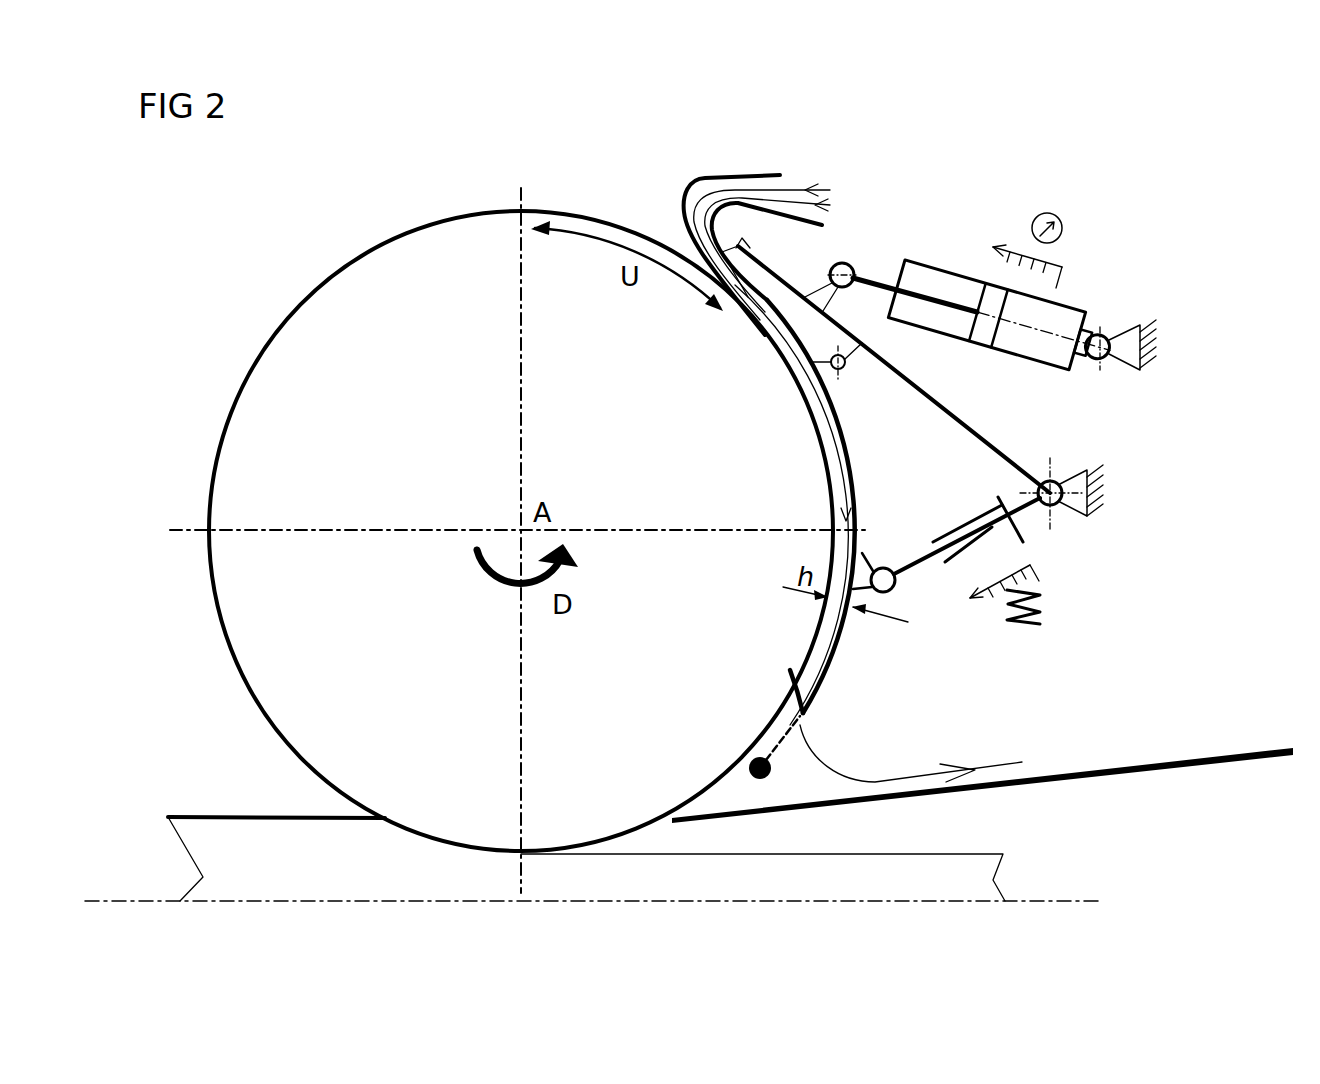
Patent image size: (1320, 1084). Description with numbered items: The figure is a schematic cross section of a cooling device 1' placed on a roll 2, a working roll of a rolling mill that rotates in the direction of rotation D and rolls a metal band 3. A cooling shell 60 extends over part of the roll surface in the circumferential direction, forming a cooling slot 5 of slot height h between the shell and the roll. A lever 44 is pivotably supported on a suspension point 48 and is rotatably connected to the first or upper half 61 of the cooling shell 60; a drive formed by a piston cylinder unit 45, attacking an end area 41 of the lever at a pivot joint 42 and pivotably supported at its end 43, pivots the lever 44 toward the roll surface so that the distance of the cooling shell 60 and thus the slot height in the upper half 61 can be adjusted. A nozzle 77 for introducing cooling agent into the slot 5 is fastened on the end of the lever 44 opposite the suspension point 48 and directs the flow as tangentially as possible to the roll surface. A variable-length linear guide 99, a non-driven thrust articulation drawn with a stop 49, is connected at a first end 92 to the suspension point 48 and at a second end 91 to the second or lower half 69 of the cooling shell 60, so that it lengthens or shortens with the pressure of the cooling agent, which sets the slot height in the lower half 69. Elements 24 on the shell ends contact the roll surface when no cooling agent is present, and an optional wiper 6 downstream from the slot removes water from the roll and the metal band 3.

The cooling device 1' is at (997, 161).
The roll 2 is at (350, 262).
The metal band 3 is at (280, 850).
The cooling slot 5 is at (838, 433).
The wiper 6 is at (1122, 770).
The element for contacting the roll surface 24 is at (753, 760).
The end area of the lever 41 is at (768, 280).
The pivot joint 42 is at (853, 271).
The end of the piston cylinder unit 43 is at (1060, 300).
The lever 44 is at (1010, 459).
The piston cylinder unit 45 is at (958, 268).
The suspension point 48 is at (1057, 482).
The stop 49 is at (978, 512).
The cooling shell 60 is at (848, 488).
The first half of the cooling shell 61 is at (783, 325).
The second half of the cooling shell 69 is at (800, 655).
The nozzle 77 is at (737, 178).
The second end of the linear guide 91 is at (913, 567).
The first end of the linear guide 92 is at (1048, 522).
The variable-length linear guide 99 is at (965, 562).